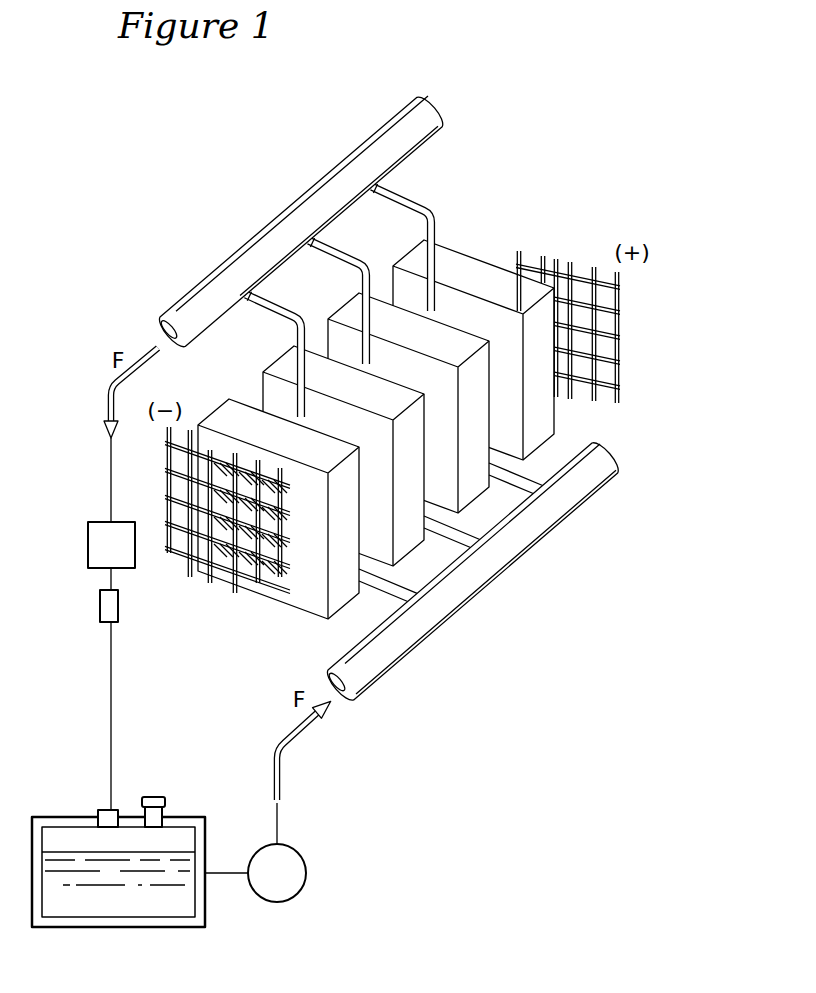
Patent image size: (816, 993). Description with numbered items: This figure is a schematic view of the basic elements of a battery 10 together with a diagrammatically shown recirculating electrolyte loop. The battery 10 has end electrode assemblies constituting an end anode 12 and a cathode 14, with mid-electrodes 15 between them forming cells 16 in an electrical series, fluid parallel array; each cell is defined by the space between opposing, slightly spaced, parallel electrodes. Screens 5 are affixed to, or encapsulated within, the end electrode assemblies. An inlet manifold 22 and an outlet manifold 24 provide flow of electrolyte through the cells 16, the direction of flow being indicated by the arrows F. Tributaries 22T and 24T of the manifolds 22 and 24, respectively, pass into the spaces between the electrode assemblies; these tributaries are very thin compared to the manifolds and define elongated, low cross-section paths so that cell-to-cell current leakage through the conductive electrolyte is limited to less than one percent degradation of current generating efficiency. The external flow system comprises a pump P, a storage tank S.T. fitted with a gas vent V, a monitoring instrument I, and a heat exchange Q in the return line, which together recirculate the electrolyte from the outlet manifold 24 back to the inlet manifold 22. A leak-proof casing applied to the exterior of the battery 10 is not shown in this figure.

The screens 5 is at (618, 303).
The battery 10 is at (376, 401).
The end anode 12 is at (299, 599).
The cathode 14 is at (483, 254).
The mid-electrodes 15 is at (359, 446).
The cells 16 is at (277, 405).
The inlet manifold 22 is at (400, 661).
The tributaries of inlet manifold 22T is at (527, 478).
The outlet manifold 24 is at (180, 299).
The tributaries of outlet manifold 24T is at (280, 305).
The heat exchange Q is at (88, 537).
The monitoring instrument I is at (100, 603).
The storage tank S.T. is at (80, 817).
The gas vent V is at (165, 807).
The pump P is at (277, 873).